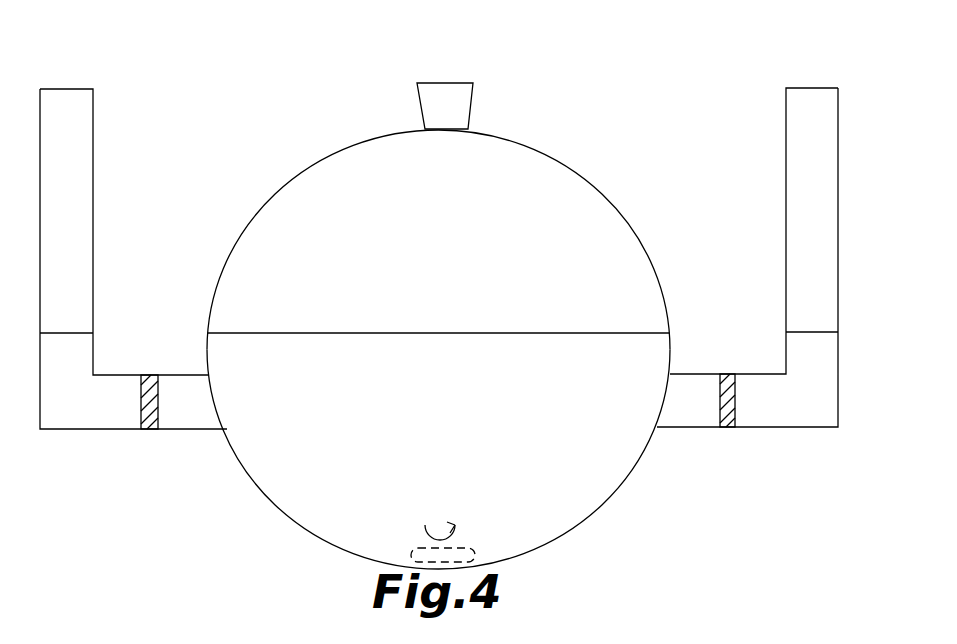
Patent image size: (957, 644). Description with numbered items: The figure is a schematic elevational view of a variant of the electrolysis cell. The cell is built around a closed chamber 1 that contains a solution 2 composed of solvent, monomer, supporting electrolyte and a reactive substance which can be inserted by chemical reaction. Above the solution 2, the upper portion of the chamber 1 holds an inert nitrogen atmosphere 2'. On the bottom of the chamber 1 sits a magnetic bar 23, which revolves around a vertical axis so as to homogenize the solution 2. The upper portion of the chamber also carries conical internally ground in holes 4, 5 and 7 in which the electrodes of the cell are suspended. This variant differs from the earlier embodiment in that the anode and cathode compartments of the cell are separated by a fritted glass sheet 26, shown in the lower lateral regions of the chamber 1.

The closed chamber 1 is at (463, 349).
The solution 2 is at (446, 460).
The inert nitrogen atmosphere 2' is at (458, 239).
The conical internally ground in hole 4 is at (805, 104).
The conical internally ground in hole 5 is at (57, 102).
The conical internally ground in hole 7 is at (457, 92).
The magnetic bar 23 is at (475, 550).
The fritted glass sheet 26 is at (153, 425).